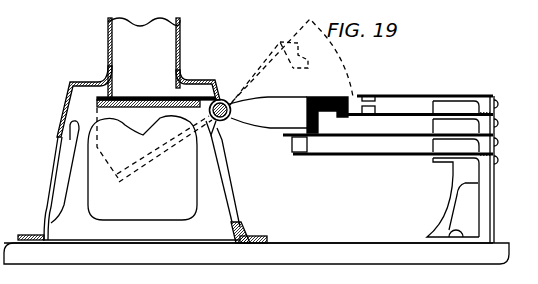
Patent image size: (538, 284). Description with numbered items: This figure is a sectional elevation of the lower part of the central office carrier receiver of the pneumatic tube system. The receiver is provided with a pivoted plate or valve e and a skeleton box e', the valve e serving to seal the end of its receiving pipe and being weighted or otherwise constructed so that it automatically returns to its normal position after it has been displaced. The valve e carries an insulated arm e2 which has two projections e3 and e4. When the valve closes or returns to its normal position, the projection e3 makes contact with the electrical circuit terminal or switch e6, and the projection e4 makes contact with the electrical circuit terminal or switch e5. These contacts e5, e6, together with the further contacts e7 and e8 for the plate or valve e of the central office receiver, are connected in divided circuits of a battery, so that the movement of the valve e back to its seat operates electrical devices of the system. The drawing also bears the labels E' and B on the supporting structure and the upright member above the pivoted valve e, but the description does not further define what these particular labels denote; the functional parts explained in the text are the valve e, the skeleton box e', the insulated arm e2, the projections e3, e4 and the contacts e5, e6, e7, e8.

The frame or standard E' is at (142, 133).
The column B is at (144, 58).
The pivoted plate or valve e is at (156, 111).
The skeleton box e' is at (150, 164).
The insulated arm e2 is at (325, 89).
The projection e3 is at (291, 73).
The projection e4 is at (353, 97).
The electrical circuit terminal or switch e5 is at (420, 117).
The electrical circuit terminal or switch e6 is at (388, 142).
The contact e7 is at (425, 95).
The contact e8 is at (393, 195).